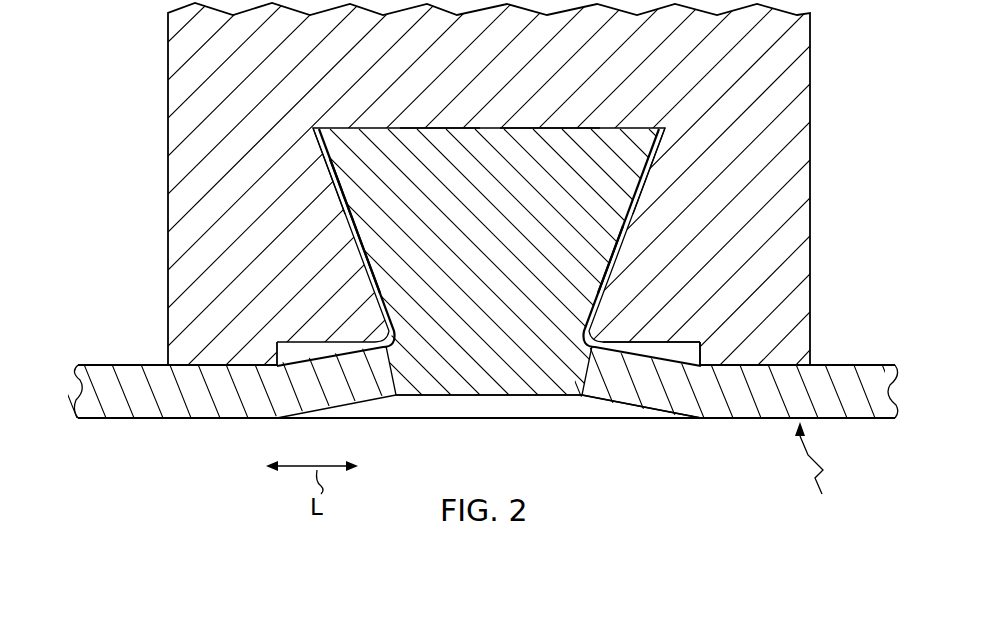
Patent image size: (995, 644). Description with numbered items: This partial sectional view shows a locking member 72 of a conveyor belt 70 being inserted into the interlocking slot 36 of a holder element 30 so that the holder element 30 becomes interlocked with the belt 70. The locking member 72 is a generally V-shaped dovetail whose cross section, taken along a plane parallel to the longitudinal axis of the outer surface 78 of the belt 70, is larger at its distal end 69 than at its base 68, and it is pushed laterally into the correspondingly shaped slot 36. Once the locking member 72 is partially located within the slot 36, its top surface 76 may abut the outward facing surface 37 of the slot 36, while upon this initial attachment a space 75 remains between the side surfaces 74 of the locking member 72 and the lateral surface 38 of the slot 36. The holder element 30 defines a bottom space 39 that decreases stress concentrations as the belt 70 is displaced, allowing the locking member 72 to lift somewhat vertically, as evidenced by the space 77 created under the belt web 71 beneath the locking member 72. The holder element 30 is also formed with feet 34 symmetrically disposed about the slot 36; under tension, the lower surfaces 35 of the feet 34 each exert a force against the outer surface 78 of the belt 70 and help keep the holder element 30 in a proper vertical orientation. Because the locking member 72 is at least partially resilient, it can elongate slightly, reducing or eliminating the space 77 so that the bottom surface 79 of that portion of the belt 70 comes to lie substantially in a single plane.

The holder element 30 is at (157, 135).
The feet 34 is at (814, 353).
The lower surfaces 35 is at (242, 366).
The slot 36 is at (660, 174).
The outward facing surface 37 is at (600, 131).
The lateral surface 38 is at (331, 160).
The bottom space 39 is at (683, 350).
The base 68 is at (472, 345).
The distal end 69 is at (437, 132).
The belt 70 is at (818, 471).
The belt web 71 is at (872, 395).
The locking member 72 is at (472, 270).
The side surfaces 74 is at (349, 222).
The space 75 is at (364, 262).
The top surface 76 is at (529, 128).
The space 77 is at (580, 400).
The outer surface 78 is at (218, 365).
The bottom surface 79 is at (142, 419).